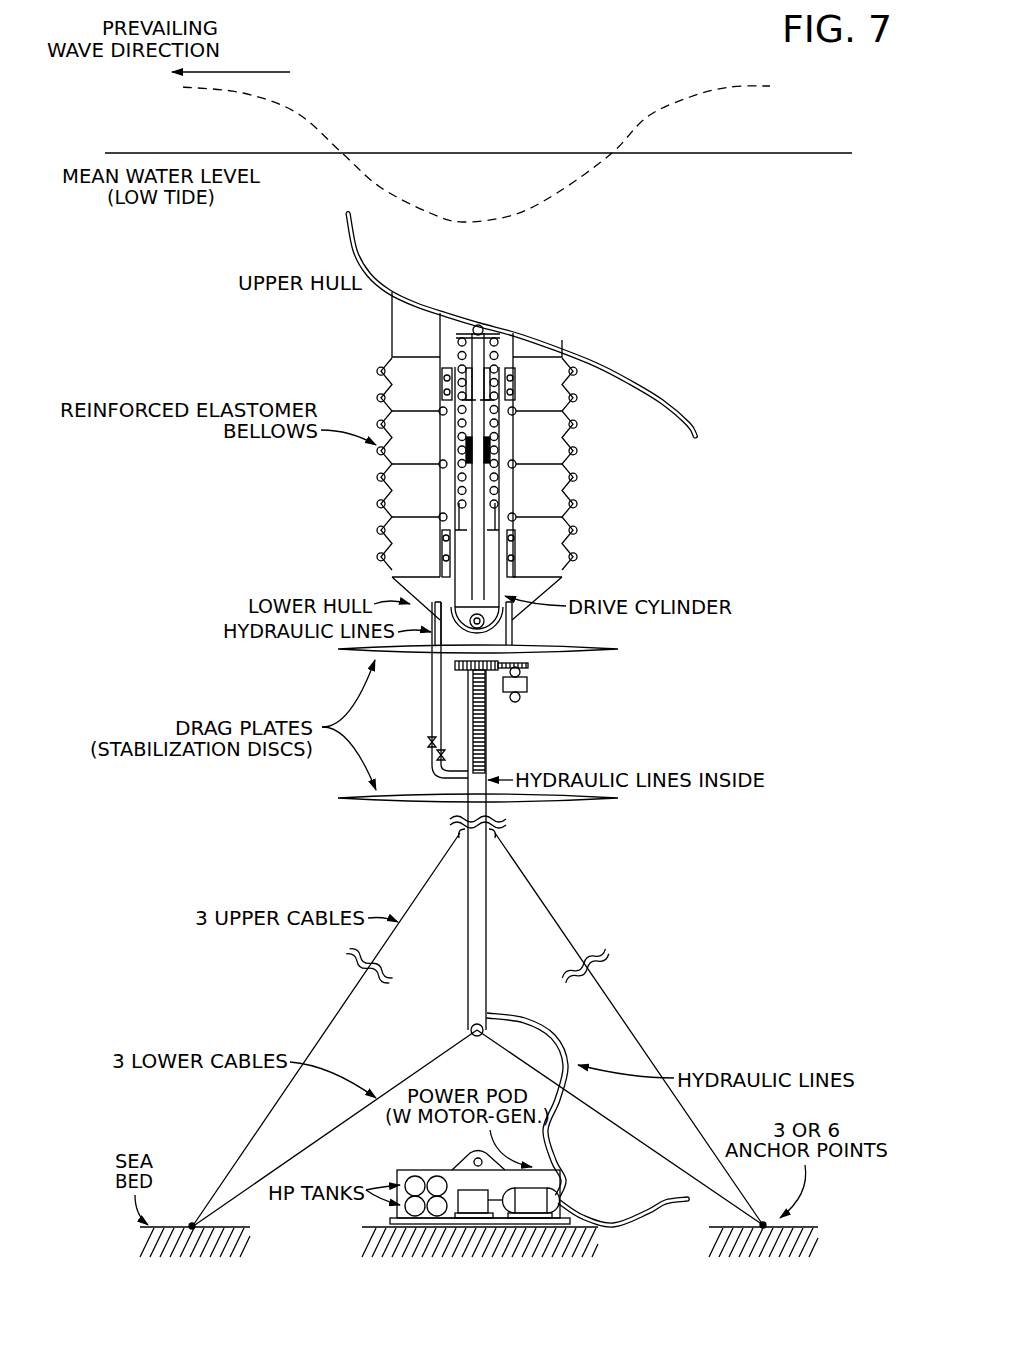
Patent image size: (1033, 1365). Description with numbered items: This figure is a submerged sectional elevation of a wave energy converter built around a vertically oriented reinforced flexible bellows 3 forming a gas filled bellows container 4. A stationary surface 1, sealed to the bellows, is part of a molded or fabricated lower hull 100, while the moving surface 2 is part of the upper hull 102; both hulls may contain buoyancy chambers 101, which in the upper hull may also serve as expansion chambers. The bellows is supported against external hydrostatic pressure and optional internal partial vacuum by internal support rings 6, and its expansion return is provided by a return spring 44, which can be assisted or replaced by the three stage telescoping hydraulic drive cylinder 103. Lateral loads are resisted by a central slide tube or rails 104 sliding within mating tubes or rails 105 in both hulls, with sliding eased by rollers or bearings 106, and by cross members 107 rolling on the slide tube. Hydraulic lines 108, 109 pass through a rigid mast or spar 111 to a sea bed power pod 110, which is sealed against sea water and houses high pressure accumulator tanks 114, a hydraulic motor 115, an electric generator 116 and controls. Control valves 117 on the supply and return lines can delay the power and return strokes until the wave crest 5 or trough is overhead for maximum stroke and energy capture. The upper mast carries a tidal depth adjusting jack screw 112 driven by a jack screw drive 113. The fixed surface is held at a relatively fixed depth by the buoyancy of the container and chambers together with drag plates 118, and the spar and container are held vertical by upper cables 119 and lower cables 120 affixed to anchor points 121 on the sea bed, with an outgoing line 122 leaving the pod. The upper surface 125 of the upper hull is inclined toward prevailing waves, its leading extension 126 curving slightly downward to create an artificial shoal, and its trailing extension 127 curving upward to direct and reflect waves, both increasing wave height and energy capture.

The stationary surface 1 is at (545, 570).
The moving surface 2 is at (412, 352).
The reinforced flexible bellows 3 is at (565, 520).
The gas filled bellows container 4 is at (392, 485).
The wave crest 5 is at (735, 88).
The support rings 6 is at (574, 396).
The return spring 44 is at (490, 375).
The lower hull 100 is at (512, 617).
The buoyancy chambers 101 is at (403, 326).
The upper hull 102 is at (392, 303).
The telescoping hydraulic drive cylinder 103 is at (497, 580).
The slide tube or rails 104 is at (392, 463).
The mating tubes or rails 105 is at (443, 395).
The rollers or bearings 106 is at (442, 535).
The cross members 107 is at (520, 428).
The hydraulic line 108 is at (440, 690).
The hydraulic line 109 is at (432, 712).
The power pod 110 is at (467, 1157).
The mast or spar 111 is at (488, 925).
The tidal depth adjusting jack screw 112 is at (487, 720).
The jack screw drive 113 is at (529, 686).
The high pressure hydraulic fluid accumulator tanks 114 is at (434, 1170).
The hydraulic motor 115 is at (484, 1190).
The electric generator 116 is at (558, 1193).
The control valves 117 is at (440, 756).
The drag plates 118 is at (360, 652).
The upper cables 119 is at (433, 867).
The lower cables 120 is at (422, 1070).
The anchor points 121 is at (193, 1222).
The power cable 122 is at (634, 1230).
The upper surface 125 is at (457, 312).
The leading extension 126 is at (665, 392).
The trailing extension 127 is at (358, 236).